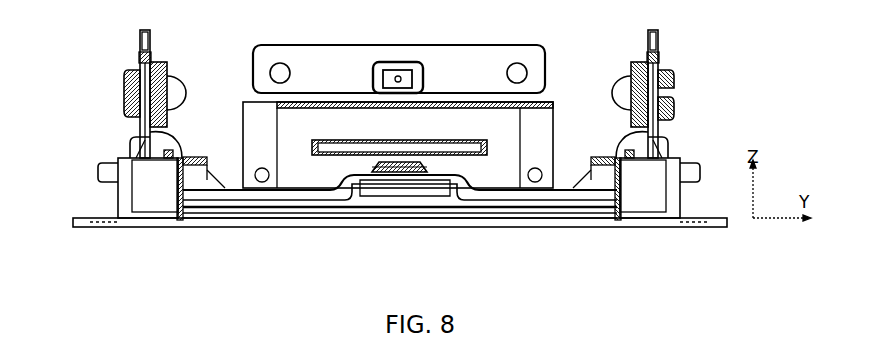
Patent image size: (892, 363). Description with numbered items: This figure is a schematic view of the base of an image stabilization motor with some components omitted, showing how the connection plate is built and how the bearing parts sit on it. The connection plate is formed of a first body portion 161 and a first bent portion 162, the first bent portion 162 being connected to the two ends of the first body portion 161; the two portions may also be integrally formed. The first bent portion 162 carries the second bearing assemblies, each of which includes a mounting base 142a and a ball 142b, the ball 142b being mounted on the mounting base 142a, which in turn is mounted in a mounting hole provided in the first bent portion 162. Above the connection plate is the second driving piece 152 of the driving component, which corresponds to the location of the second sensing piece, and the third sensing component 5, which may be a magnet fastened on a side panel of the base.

The third sensing component 5 is at (436, 58).
The mounting base 142a is at (127, 84).
The ball 142b is at (180, 92).
The second driving piece 152 is at (508, 137).
The first body portion 161 is at (255, 190).
The first bent portion 162 is at (135, 127).